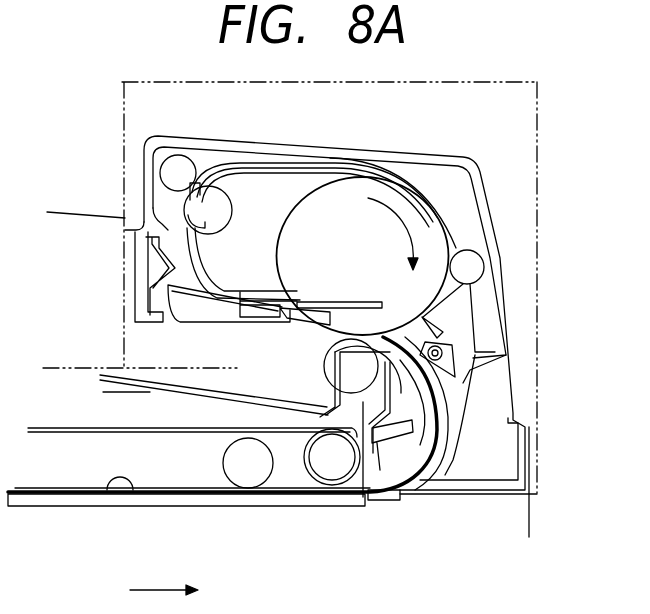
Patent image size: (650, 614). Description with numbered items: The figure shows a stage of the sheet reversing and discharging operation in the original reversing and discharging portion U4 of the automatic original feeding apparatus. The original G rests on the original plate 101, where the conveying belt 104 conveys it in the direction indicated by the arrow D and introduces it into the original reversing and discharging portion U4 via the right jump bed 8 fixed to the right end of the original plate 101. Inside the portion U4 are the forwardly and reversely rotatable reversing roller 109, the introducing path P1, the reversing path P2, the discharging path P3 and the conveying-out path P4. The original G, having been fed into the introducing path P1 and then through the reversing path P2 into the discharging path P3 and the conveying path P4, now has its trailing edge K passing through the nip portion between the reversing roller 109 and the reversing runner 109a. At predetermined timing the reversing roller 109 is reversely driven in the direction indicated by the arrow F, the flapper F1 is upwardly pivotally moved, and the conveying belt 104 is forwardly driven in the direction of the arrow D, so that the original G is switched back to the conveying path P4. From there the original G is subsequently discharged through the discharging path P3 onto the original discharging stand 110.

The reversing path P2 is at (270, 165).
The original reversing and discharging portion U4 is at (331, 288).
The reversing roller 109 is at (280, 253).
The discharging path P3 is at (338, 328).
The arrow F is at (393, 237).
The original discharging stand 110 is at (150, 385).
The flapper F1 is at (300, 330).
The trailing edge K is at (450, 330).
The reversing runner 109a is at (335, 387).
The conveying-out path P4 is at (450, 375).
The introducing path P1 is at (447, 418).
The original G is at (428, 453).
The conveying belt 104 is at (133, 492).
The original plate 101 is at (300, 506).
The right jump bed 8 is at (383, 502).
The arrow D is at (178, 590).